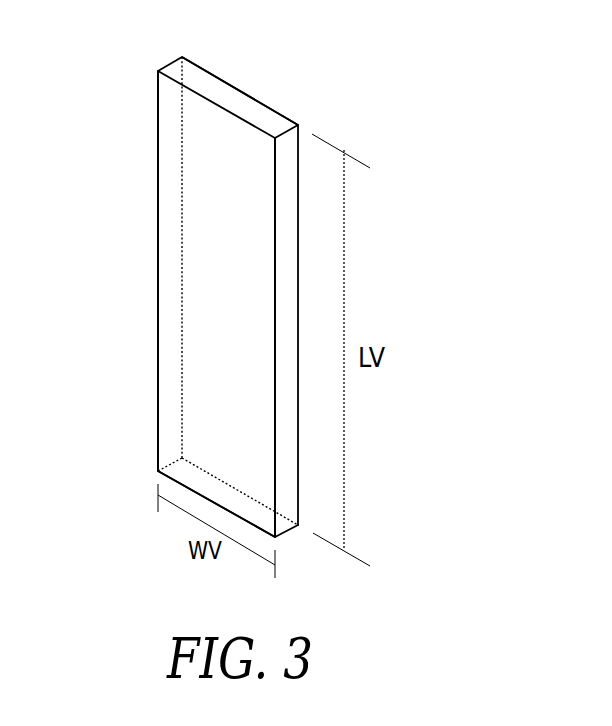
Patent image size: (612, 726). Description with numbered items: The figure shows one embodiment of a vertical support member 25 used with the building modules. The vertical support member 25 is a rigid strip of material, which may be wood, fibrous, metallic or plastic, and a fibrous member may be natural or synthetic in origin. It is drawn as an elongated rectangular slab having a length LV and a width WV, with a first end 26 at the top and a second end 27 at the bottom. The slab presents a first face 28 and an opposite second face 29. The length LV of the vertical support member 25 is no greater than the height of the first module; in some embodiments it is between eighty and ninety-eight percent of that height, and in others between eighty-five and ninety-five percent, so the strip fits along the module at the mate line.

The vertical support member 25 is at (291, 74).
The first end 26 is at (212, 77).
The second end 27 is at (207, 488).
The first face 28 is at (289, 295).
The second face 29 is at (168, 219).